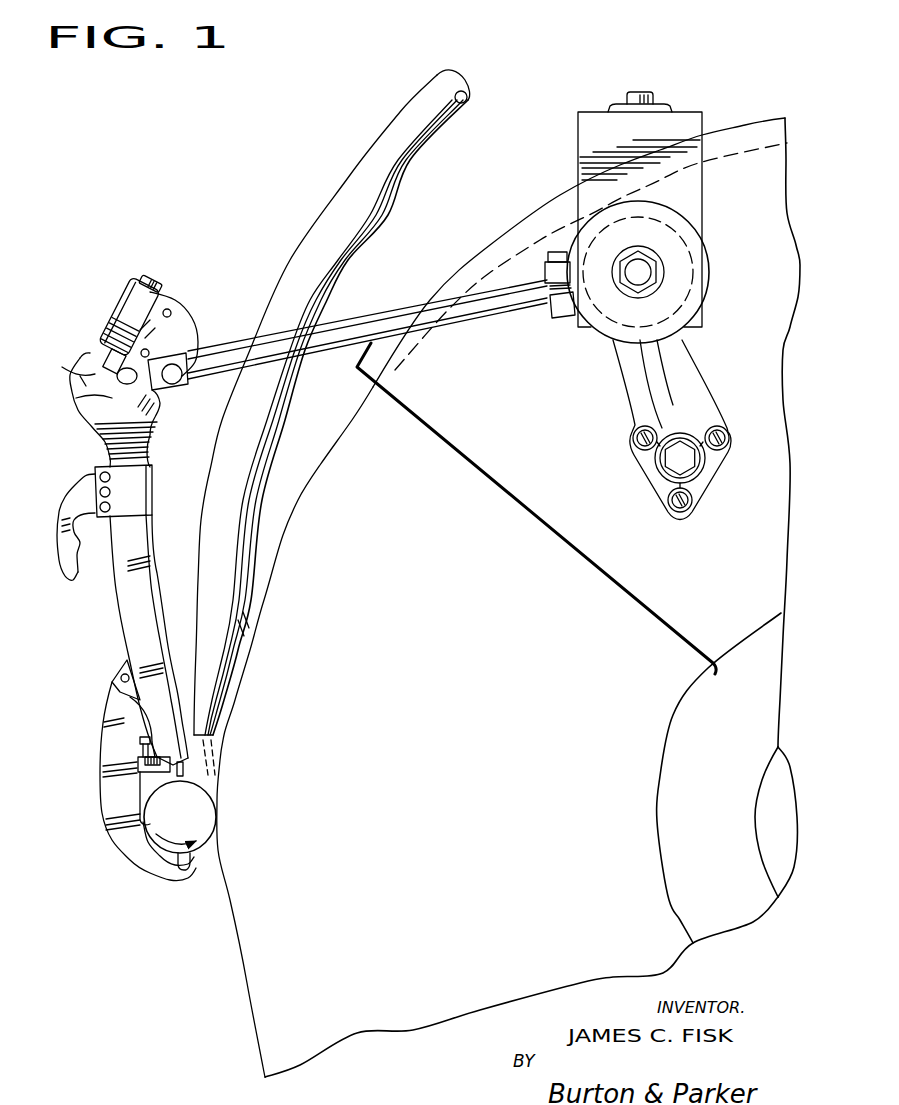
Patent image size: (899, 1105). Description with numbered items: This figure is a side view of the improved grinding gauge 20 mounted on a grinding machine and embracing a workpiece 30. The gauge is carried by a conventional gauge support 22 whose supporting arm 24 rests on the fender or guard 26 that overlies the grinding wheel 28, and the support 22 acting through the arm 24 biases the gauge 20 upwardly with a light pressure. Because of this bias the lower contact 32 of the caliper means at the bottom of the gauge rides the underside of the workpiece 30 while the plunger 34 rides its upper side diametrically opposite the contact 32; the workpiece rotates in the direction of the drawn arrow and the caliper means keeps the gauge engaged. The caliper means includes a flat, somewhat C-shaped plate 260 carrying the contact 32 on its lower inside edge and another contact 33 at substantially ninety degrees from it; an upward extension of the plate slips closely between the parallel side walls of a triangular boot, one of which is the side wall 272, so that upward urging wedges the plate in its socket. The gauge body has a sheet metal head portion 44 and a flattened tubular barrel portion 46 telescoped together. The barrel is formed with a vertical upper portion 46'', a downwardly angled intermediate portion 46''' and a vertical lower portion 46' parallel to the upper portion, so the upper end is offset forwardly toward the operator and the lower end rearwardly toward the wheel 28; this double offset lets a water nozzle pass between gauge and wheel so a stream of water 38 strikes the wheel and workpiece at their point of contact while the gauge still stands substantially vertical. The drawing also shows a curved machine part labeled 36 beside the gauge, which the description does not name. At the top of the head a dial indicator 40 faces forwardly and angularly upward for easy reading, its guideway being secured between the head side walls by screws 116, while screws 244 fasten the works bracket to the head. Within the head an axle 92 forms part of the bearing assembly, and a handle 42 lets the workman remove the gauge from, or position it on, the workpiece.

The grinding gauge 20 is at (78, 417).
The gauge support 22 is at (708, 208).
The supporting arm 24 is at (538, 313).
The fender or guard 26 is at (572, 446).
The grinding wheel 28 is at (247, 982).
The workpiece 30 is at (199, 827).
The lower contact 32 is at (182, 870).
The contact 33 is at (142, 845).
The plunger 34 is at (170, 775).
The windshield frame 36 is at (378, 230).
The stream of water 38 is at (210, 752).
The dial indicator 40 is at (108, 297).
The handle 42 is at (58, 538).
The head portion 44 is at (92, 398).
The barrel portion 46 is at (144, 615).
The lower barrel portion 46' is at (106, 727).
The upper barrel portion 46'' is at (110, 577).
The intermediate barrel portion 46''' is at (110, 653).
The axle 92 is at (174, 380).
The screws 116 is at (145, 353).
The screws 244 is at (95, 374).
The C-shaped plate 260 is at (125, 835).
The side wall 272 is at (123, 673).